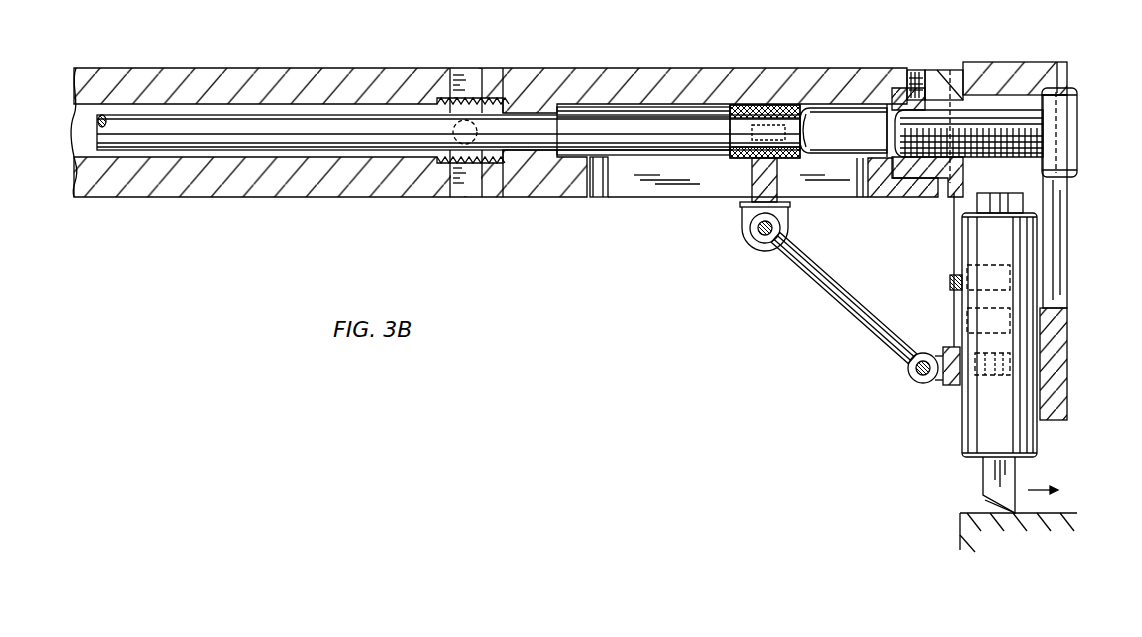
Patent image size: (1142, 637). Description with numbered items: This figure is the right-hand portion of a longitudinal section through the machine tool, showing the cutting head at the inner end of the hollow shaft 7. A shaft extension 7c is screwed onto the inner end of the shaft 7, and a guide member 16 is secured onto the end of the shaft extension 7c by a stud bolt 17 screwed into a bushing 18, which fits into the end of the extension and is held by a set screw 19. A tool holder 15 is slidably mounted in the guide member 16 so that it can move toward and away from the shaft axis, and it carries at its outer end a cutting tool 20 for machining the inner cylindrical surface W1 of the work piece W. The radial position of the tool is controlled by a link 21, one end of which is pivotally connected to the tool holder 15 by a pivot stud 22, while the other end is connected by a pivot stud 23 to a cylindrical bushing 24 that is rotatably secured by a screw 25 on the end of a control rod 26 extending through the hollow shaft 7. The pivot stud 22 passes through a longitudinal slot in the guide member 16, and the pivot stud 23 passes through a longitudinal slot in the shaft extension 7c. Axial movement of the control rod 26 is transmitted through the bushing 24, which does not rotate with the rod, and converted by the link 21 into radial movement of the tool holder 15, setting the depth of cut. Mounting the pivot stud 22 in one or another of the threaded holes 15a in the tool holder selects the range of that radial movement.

The shaft 7 is at (243, 198).
The shaft extension 7c is at (660, 67).
The cylindrical bushing 24 is at (760, 105).
The screw 25 is at (808, 138).
The control rod 26 is at (677, 128).
The pivot stud 23 is at (745, 237).
The link 21 is at (822, 305).
The pivot stud 22 is at (903, 383).
The tool holder 15 is at (962, 438).
The threaded holes 15a is at (977, 267).
The guide member 16 is at (1070, 358).
The stud bolt 17 is at (1079, 121).
The bushing 18 is at (944, 70).
The set screw 19 is at (916, 70).
The cutting tool 20 is at (988, 478).
The work piece W is at (963, 533).
The inner cylindrical surface W1 is at (1067, 513).